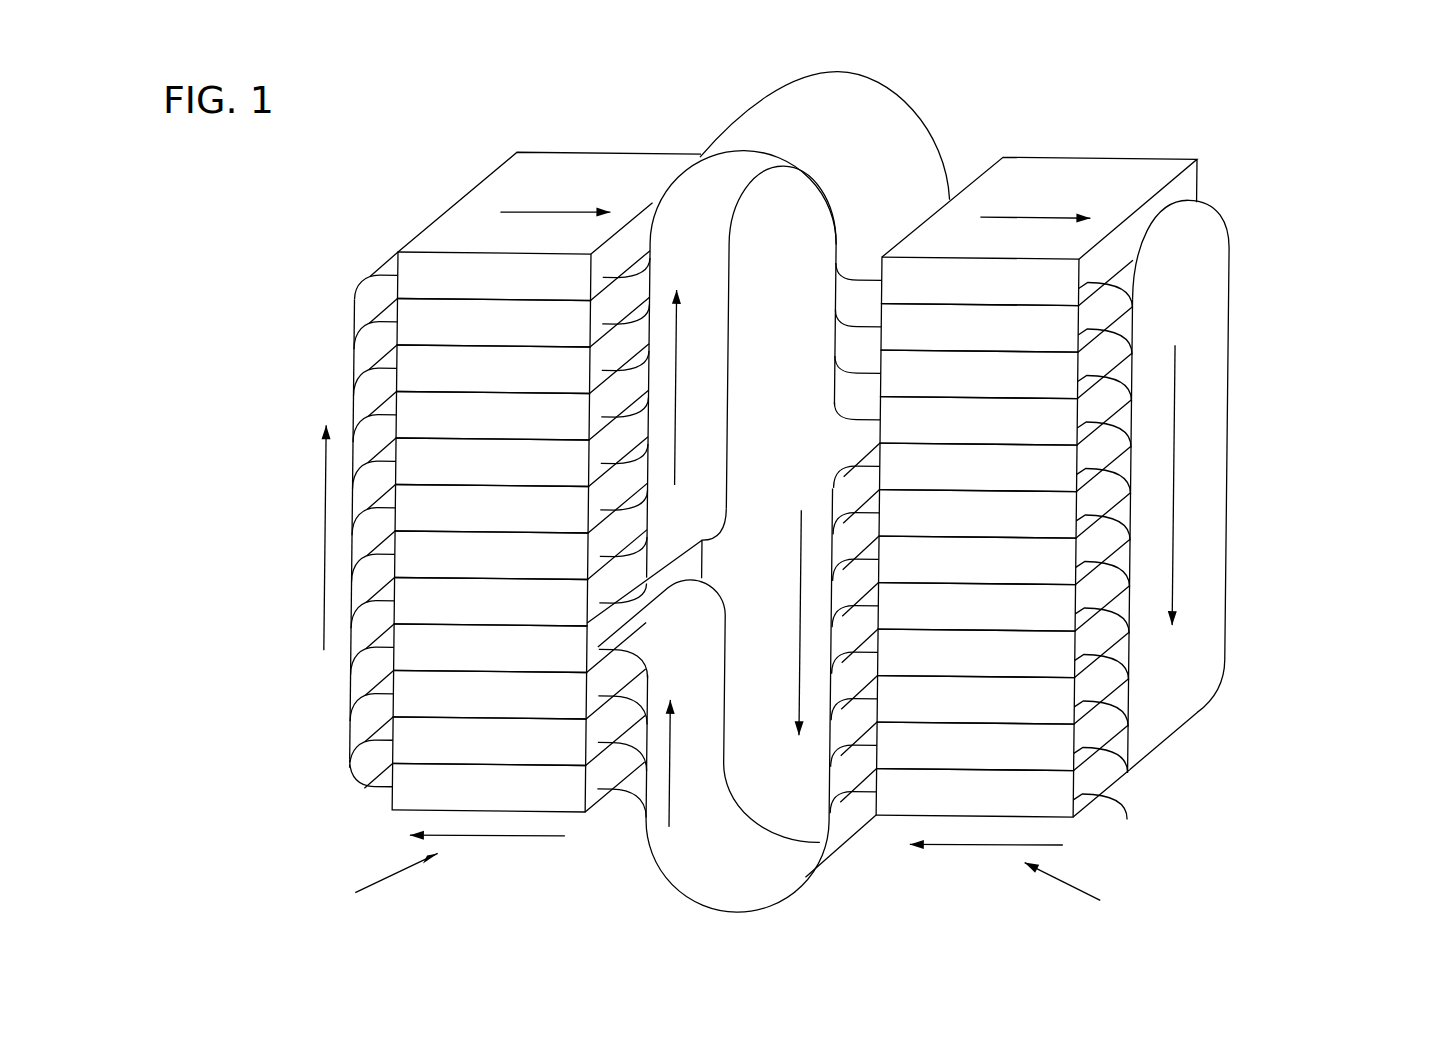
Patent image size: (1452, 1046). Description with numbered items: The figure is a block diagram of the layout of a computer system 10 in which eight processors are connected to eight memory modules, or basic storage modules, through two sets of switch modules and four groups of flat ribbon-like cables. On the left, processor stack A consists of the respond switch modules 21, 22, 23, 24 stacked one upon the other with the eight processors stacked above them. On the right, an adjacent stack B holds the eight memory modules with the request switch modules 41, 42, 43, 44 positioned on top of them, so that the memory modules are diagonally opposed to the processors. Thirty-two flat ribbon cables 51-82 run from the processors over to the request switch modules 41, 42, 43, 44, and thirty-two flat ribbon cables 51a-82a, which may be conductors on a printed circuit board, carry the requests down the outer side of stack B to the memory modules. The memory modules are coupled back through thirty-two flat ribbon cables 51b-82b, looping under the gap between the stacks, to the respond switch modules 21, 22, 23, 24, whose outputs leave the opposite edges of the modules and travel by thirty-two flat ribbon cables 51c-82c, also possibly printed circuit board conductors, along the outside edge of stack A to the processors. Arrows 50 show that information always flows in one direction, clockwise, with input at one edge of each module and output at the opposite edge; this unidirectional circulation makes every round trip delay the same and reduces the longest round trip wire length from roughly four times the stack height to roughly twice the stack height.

The system 10 is at (747, 539).
The respond switch module 21 is at (490, 648).
The respond switch module 22 is at (489, 694).
The respond switch module 23 is at (489, 741).
The respond switch module 24 is at (488, 787).
The request switch module 41 is at (979, 281).
The request switch module 42 is at (979, 328).
The request switch module 43 is at (979, 374).
The request switch module 44 is at (978, 421).
The arrows 50 is at (552, 206).
The flat ribbon cables 51-82 is at (849, 145).
The flat ribbon cables 51a-82a is at (1178, 689).
The flat ribbon cables 51b-82b is at (851, 825).
The flat ribbon cables 51c-82c is at (351, 370).